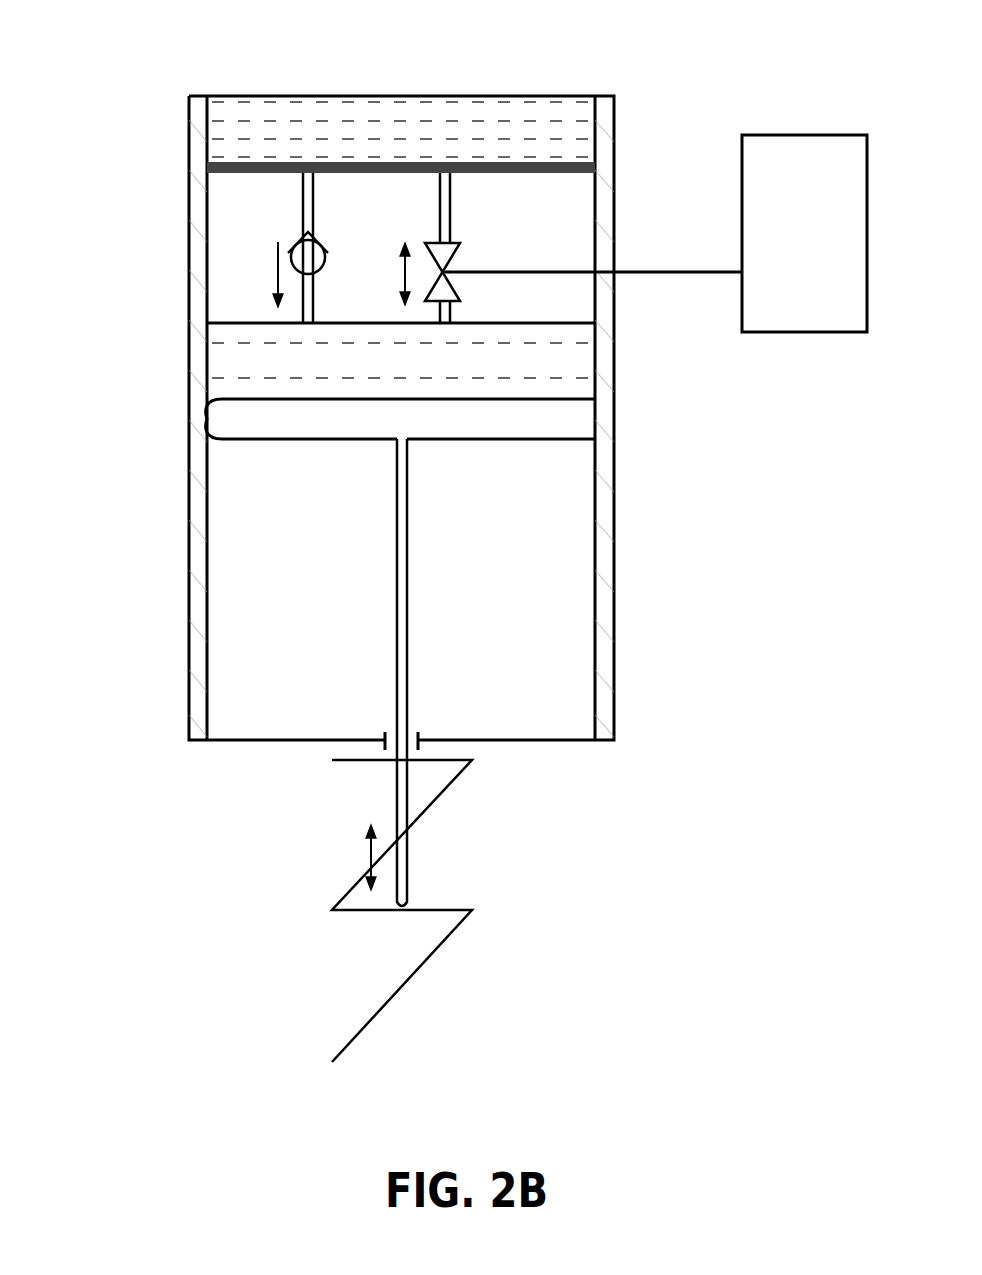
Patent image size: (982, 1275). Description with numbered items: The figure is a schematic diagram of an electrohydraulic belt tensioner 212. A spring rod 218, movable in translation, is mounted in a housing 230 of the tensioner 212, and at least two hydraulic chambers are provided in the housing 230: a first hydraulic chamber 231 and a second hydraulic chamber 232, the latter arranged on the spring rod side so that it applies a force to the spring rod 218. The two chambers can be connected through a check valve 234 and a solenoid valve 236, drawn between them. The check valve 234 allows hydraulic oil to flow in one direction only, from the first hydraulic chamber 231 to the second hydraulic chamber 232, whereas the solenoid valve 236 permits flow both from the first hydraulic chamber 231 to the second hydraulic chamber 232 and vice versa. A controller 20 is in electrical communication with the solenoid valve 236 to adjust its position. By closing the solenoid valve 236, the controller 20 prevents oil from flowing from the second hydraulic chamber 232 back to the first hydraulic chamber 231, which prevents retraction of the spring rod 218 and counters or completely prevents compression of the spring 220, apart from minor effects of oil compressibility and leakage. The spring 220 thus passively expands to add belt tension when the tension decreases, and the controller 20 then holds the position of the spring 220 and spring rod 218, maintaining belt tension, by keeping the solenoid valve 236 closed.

The controller 20 is at (798, 135).
The tensioner 212 is at (150, 190).
The spring rod 218 is at (405, 862).
The spring 220 is at (412, 975).
The housing 230 is at (610, 597).
The first hydraulic chamber 231 is at (533, 110).
The second hydraulic chamber 232 is at (587, 387).
The check valve 234 is at (308, 212).
The solenoid valve 236 is at (458, 290).